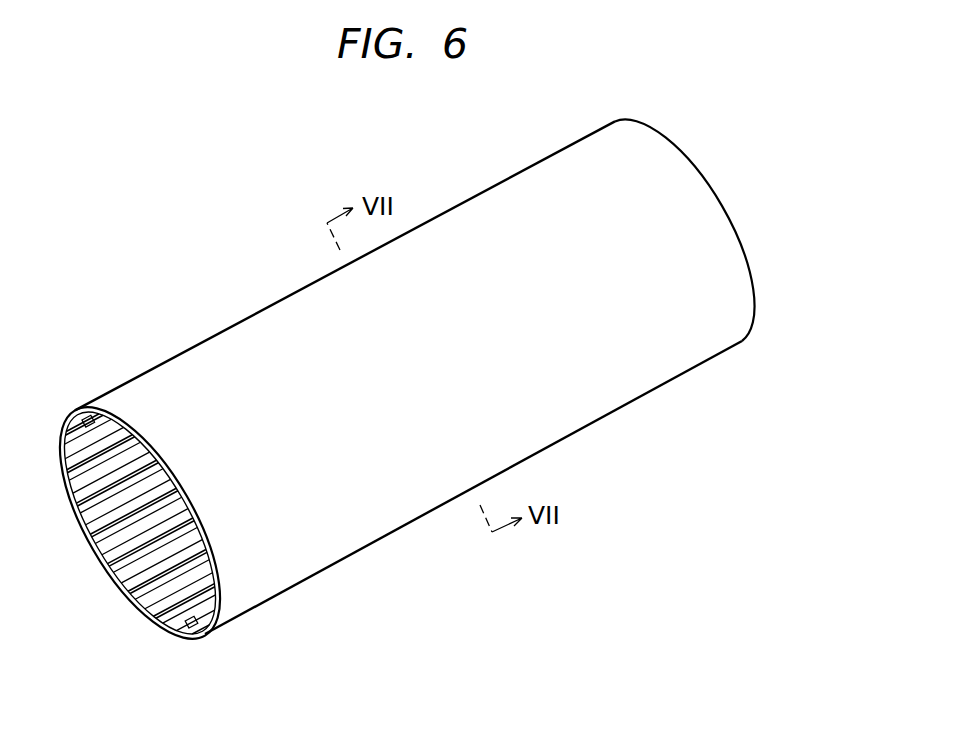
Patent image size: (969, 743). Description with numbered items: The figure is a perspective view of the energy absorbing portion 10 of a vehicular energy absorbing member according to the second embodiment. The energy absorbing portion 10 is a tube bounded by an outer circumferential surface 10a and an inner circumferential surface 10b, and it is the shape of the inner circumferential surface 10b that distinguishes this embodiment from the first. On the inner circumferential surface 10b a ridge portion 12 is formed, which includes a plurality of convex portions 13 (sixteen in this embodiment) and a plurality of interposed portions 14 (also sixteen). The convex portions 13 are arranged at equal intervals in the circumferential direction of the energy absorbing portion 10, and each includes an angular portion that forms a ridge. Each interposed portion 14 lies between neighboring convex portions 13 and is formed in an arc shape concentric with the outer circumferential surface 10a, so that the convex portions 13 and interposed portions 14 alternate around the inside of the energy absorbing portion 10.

The energy absorbing portion 10 is at (500, 210).
The outer circumferential surface 10a is at (603, 402).
The inner circumferential surface 10b is at (143, 590).
The ridge portion 12 is at (114, 524).
The convex portion 13 is at (113, 563).
The interposed portion 14 is at (100, 543).